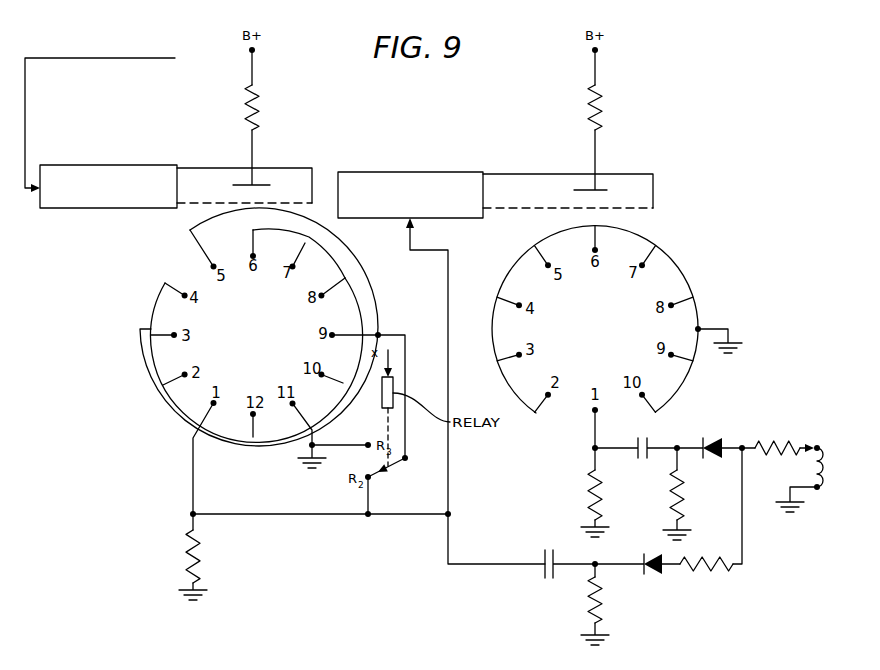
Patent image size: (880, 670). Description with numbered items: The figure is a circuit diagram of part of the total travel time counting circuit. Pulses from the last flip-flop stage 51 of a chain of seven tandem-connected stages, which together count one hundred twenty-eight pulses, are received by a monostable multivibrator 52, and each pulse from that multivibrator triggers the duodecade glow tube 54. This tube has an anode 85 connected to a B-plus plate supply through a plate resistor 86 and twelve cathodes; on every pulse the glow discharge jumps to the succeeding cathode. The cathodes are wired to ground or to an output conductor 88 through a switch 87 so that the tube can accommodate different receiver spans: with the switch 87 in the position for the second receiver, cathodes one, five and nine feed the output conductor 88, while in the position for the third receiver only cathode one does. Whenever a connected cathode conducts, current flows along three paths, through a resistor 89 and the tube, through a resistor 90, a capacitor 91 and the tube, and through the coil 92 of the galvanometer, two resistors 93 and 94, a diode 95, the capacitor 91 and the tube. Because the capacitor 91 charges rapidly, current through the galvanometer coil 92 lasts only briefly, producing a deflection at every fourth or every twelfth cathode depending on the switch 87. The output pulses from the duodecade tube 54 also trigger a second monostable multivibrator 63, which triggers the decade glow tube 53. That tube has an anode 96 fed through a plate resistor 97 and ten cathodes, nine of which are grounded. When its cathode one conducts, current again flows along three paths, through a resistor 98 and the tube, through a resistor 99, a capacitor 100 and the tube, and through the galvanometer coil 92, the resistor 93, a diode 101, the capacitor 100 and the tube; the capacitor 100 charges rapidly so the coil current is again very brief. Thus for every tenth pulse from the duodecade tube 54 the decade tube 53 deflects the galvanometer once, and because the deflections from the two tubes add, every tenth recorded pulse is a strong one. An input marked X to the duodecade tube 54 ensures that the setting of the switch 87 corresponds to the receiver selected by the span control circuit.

The flip-flop stage 51 is at (101, 113).
The monostable multivibrator 52 is at (121, 165).
The decade glow tube 53 is at (704, 257).
The duodecade glow tube 54 is at (380, 275).
The monostable multivibrator 63 is at (419, 172).
The anode 85 is at (270, 185).
The plate resistor 86 is at (259, 104).
The switch 87 is at (393, 466).
The output conductor 88 is at (398, 516).
The resistor 89 is at (190, 557).
The resistor 90 is at (588, 605).
The capacitor 91 is at (545, 570).
The galvanometer coil 92 is at (812, 466).
The resistor 93 is at (776, 441).
The resistor 94 is at (711, 567).
The diode 95 is at (651, 571).
The anode 96 is at (607, 190).
The plate resistor 97 is at (602, 108).
The resistor 98 is at (588, 493).
The resistor 99 is at (669, 505).
The capacitor 100 is at (644, 458).
The diode 101 is at (710, 440).